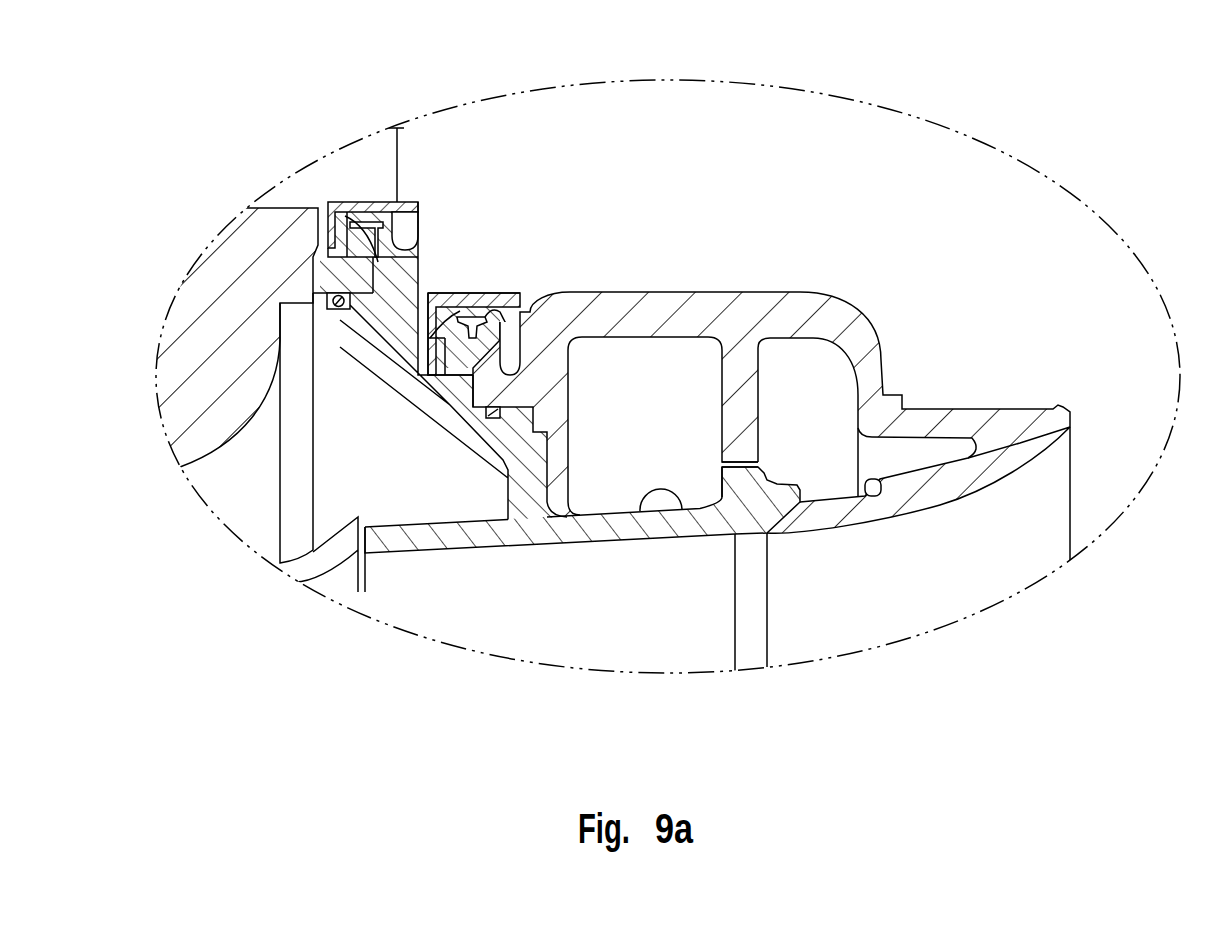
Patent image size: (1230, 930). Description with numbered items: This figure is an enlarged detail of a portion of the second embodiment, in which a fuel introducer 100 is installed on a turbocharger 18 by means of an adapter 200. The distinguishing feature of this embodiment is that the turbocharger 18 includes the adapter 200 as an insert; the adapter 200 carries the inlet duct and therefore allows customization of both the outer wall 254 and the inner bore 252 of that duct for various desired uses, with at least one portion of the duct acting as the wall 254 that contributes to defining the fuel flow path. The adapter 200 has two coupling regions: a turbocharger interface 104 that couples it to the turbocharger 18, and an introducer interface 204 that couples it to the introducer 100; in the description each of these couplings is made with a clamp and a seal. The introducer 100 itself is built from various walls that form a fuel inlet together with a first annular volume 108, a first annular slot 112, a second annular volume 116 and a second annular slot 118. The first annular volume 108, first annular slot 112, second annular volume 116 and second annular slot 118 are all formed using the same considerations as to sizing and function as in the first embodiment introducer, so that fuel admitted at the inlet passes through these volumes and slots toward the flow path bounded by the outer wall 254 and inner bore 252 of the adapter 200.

The turbocharger 18 is at (206, 243).
The fuel introducer 100 is at (1088, 286).
The turbocharger interface 104 is at (350, 244).
The first annular volume 108 is at (672, 358).
The first annular slot 112 is at (764, 461).
The second annular volume 116 is at (812, 364).
The second annular slot 118 is at (764, 519).
The adapter 200 is at (447, 257).
The introducer interface 204 is at (521, 294).
The inner bore 252 is at (605, 540).
The outer wall 254 is at (679, 511).